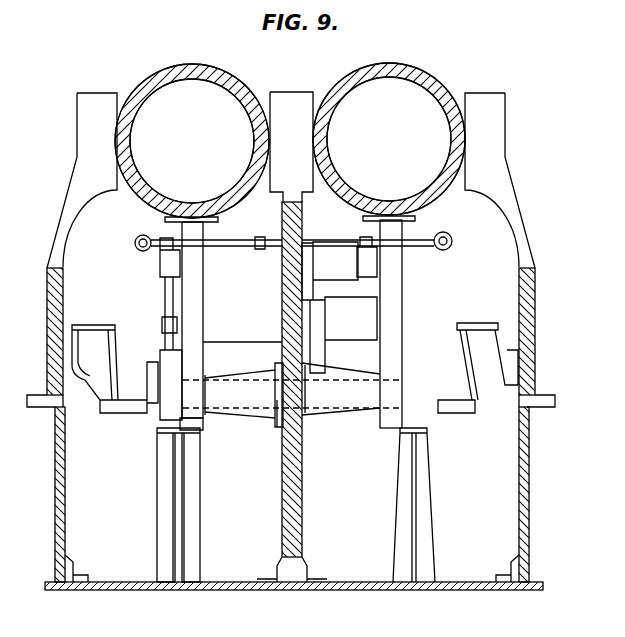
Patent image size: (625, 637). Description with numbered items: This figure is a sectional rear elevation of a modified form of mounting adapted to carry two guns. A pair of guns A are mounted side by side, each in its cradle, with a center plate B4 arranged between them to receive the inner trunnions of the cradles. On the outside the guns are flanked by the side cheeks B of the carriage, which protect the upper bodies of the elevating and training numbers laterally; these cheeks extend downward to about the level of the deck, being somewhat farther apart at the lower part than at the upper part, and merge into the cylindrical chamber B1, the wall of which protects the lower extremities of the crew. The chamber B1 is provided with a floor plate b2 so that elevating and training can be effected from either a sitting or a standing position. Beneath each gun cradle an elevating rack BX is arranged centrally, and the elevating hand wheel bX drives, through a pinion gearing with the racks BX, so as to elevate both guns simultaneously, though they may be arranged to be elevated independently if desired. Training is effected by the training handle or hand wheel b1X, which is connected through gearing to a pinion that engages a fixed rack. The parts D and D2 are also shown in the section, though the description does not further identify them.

The gun A is at (290, 142).
The side cheek of the carriage B is at (55, 240).
The cylindrical chamber B1 is at (62, 453).
The center plate B4 is at (292, 337).
The elevating rack BX is at (195, 281).
The slide block D is at (165, 265).
The connecting rod D2 is at (157, 237).
The elevating hand wheel bX is at (115, 340).
The training handle or hand wheel b1X is at (448, 407).
The floor plate b2 is at (358, 589).